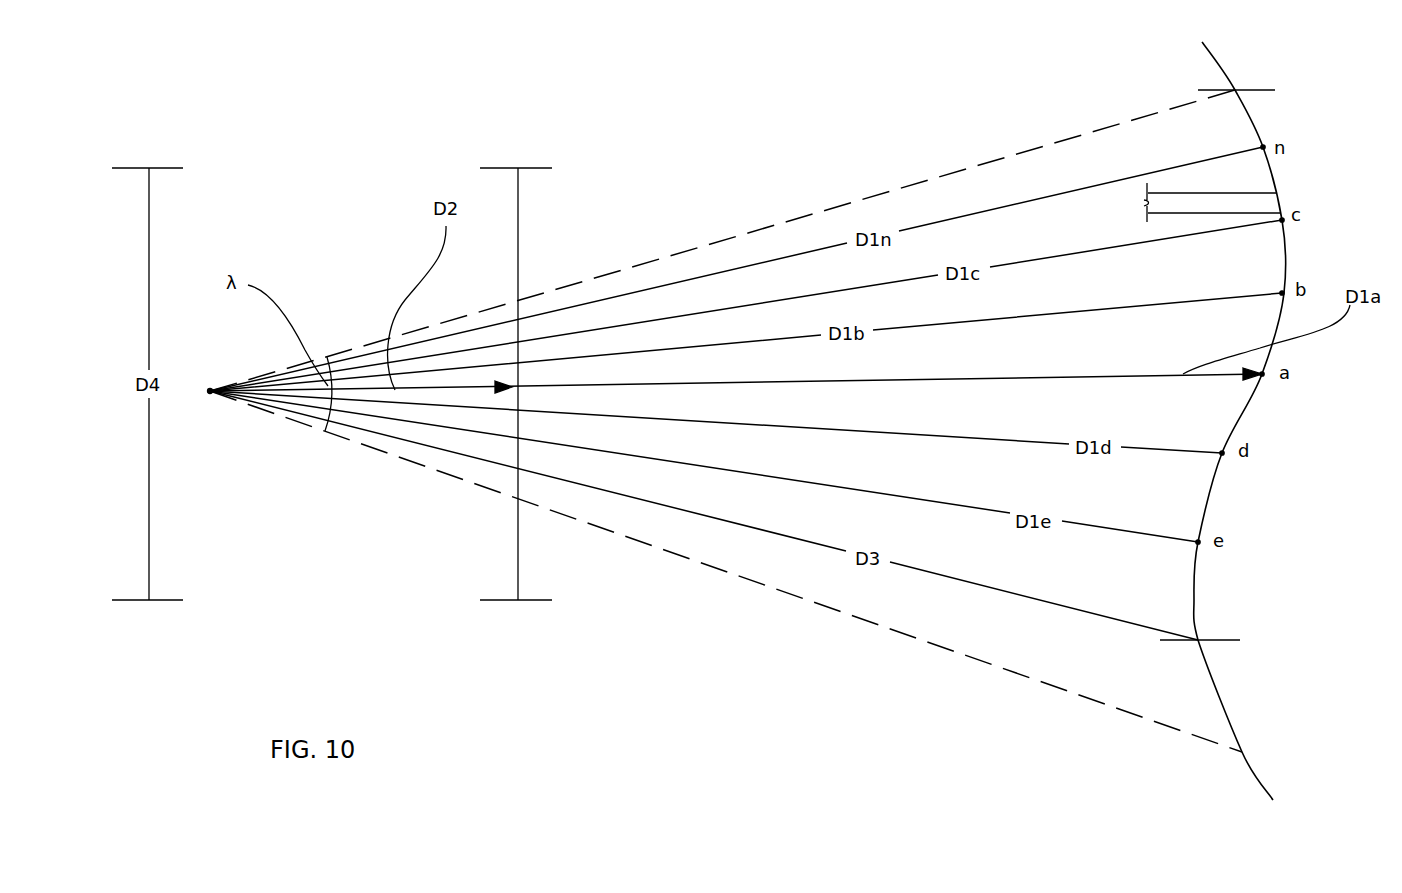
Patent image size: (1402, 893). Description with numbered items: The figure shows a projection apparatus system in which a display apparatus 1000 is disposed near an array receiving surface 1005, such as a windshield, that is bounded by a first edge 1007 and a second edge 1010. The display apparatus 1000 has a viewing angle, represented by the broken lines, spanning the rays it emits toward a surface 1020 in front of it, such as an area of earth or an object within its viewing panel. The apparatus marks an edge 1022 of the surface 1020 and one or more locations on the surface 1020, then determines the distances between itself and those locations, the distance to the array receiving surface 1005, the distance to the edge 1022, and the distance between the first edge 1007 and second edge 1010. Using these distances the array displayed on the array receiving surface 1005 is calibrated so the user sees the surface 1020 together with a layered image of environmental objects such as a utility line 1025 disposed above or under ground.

The display apparatus 1000 is at (213, 397).
The array receiving surface 1005 is at (518, 530).
The first edge 1007 is at (533, 168).
The second edge 1010 is at (528, 602).
The surface 1020 is at (1207, 503).
The edge of the surface 1022 is at (1203, 635).
The utility line 1025 is at (1230, 193).